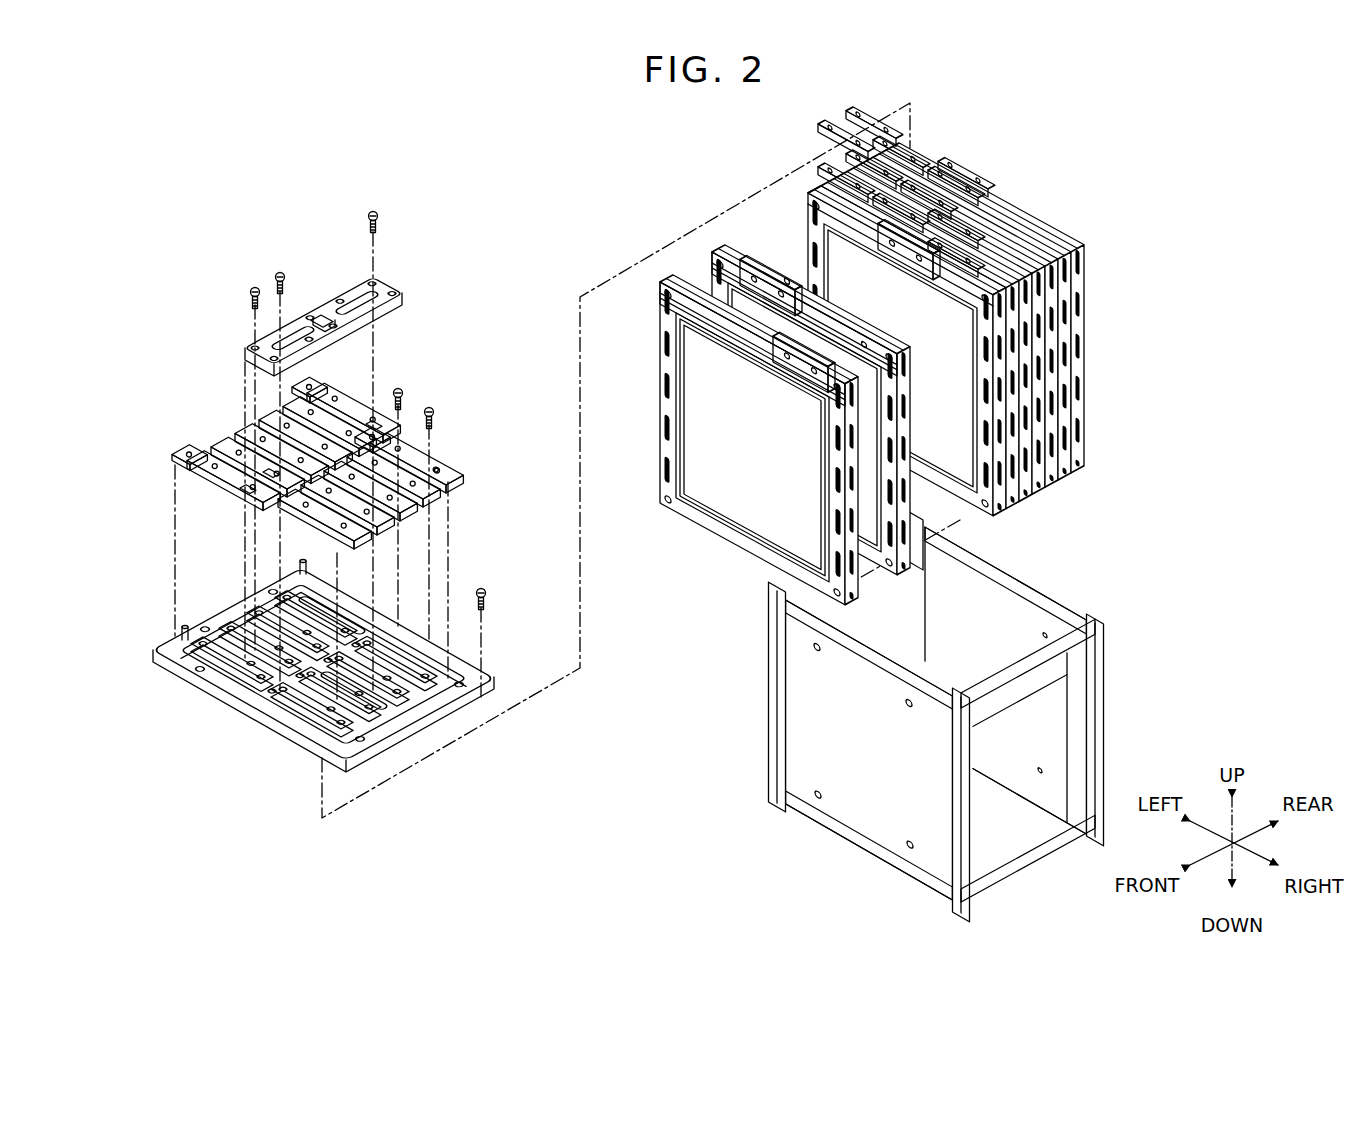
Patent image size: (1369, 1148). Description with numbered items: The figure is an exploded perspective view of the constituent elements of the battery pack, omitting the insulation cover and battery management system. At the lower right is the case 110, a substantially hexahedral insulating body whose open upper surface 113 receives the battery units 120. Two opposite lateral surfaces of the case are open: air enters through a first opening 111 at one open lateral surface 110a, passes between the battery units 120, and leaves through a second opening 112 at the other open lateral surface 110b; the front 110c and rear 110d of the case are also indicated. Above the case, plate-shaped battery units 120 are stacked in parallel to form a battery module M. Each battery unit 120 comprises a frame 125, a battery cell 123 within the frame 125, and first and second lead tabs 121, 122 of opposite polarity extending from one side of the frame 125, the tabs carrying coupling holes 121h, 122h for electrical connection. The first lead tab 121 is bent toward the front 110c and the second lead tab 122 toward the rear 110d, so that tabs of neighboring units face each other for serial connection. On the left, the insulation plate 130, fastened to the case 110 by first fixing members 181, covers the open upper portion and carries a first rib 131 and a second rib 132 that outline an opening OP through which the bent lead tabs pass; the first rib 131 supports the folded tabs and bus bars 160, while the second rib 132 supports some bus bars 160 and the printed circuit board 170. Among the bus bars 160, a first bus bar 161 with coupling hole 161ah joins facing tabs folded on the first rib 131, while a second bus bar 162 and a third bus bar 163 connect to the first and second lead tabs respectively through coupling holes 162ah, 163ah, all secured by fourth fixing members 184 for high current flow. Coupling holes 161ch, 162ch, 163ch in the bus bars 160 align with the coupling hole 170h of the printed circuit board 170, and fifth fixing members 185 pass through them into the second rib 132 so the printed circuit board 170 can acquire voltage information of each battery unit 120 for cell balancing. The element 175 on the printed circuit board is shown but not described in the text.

The case 110 is at (949, 728).
The open lateral surface 110a is at (1028, 858).
The other open lateral surface 110b is at (869, 654).
The front of the case 110c is at (869, 845).
The rear of the case 110d is at (1006, 580).
The first opening 111 is at (1030, 716).
The second opening 112 is at (869, 750).
The open upper surface 113 is at (1006, 680).
The battery unit 120 is at (813, 350).
The first lead tab 121 is at (793, 329).
The coupling hole 121h is at (862, 330).
The second lead tab 122 is at (872, 257).
The coupling hole 122h is at (790, 278).
The battery cell 123 is at (697, 410).
The frame 125 is at (660, 366).
The insulation plate 130 is at (295, 693).
The first rib 131 is at (395, 672).
The second rib 132 is at (363, 632).
The bus bar 160 is at (326, 443).
The first bus bar 161 is at (368, 446).
The coupling hole 161ah is at (447, 483).
The coupling hole 161ch is at (270, 476).
The second bus bar 162 is at (179, 469).
The coupling hole 162ah is at (195, 470).
The coupling hole 162ch is at (247, 493).
The third bus bar 163 is at (410, 390).
The coupling hole 163ah is at (335, 398).
The coupling hole 163ch is at (380, 425).
The printed circuit board 170 is at (380, 289).
The coupling hole 170h is at (398, 285).
The connector of cover plate 175 is at (312, 306).
The first fixing member 181 is at (488, 597).
The fourth fixing member 184 is at (436, 414).
The fifth fixing member 185 is at (376, 210).
The battery module M is at (1044, 193).
The opening OP is at (365, 703).